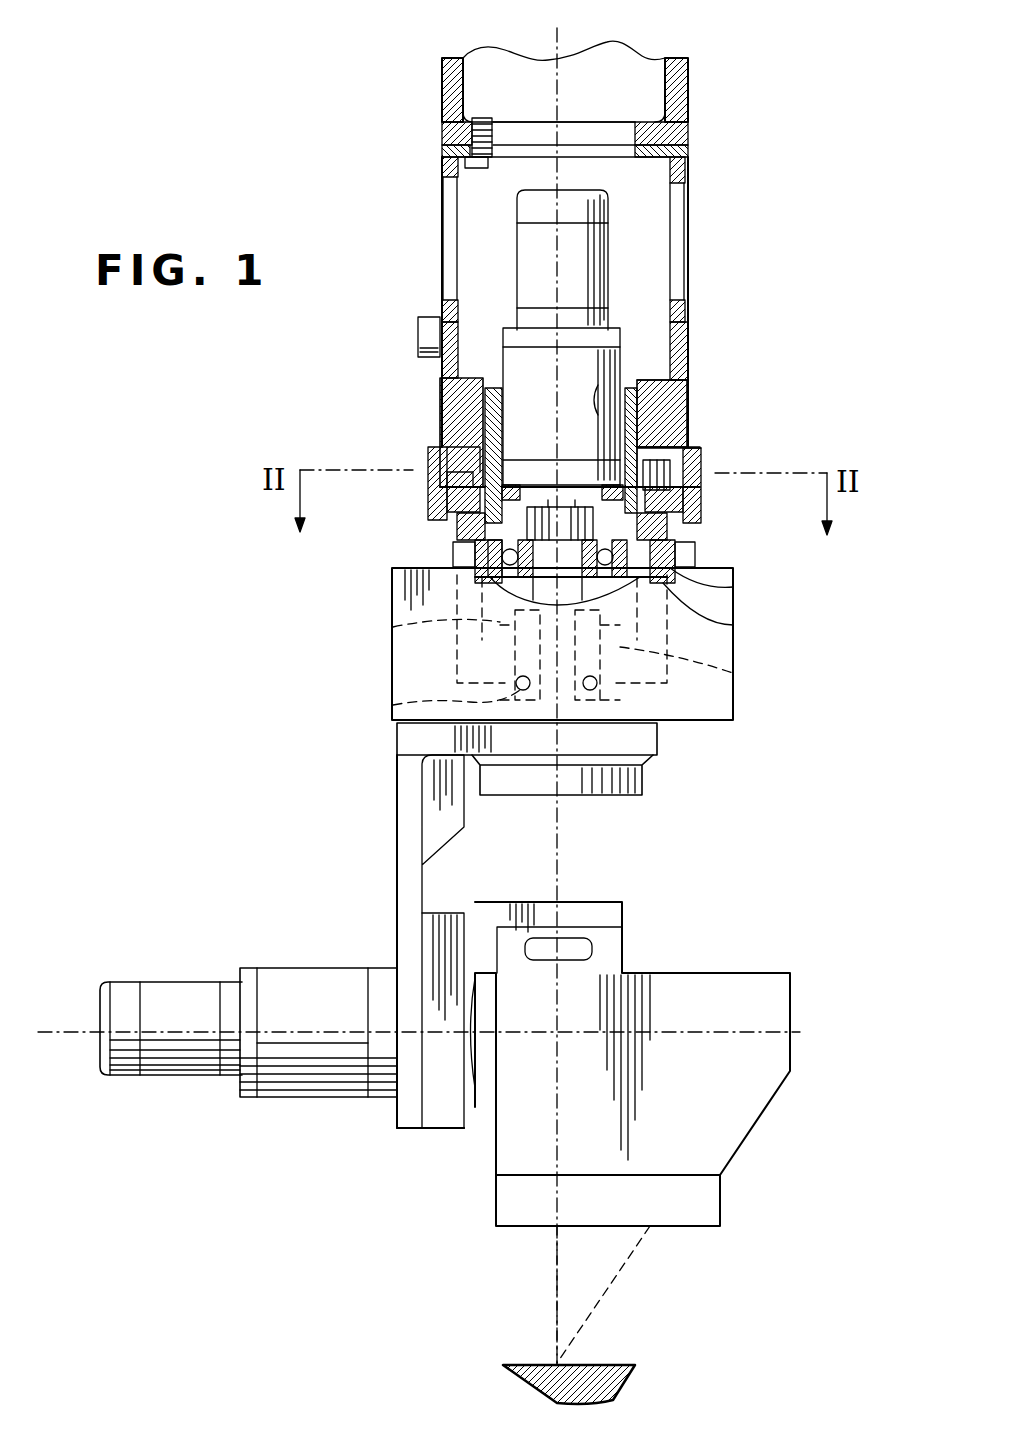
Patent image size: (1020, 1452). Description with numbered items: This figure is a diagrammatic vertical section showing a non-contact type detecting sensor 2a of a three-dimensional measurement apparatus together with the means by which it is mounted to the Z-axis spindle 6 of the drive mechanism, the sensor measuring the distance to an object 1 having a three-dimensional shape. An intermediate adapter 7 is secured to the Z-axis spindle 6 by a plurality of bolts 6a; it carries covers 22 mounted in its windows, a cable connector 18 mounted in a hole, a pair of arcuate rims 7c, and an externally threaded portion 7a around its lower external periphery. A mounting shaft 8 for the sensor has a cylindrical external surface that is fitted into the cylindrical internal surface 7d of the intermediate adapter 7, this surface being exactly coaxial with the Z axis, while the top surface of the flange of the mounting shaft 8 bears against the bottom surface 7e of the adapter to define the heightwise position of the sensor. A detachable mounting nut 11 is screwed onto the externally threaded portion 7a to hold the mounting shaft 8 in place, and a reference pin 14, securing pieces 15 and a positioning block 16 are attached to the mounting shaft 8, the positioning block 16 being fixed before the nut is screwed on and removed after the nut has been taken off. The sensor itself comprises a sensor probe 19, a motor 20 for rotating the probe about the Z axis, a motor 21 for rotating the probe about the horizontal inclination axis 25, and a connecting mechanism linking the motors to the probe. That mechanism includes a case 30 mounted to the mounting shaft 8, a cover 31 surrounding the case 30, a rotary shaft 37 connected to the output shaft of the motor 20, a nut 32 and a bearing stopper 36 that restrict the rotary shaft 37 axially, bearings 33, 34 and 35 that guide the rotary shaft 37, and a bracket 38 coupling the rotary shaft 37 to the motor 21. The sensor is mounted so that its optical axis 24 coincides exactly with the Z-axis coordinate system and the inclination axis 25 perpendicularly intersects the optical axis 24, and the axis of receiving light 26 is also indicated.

The object 1 is at (622, 1365).
The non-contact type detecting sensor 2a is at (397, 827).
The Z-axis spindle 6 is at (688, 108).
The bolts 6a is at (478, 170).
The intermediate adapter 7 is at (685, 353).
The externally threaded portion 7a is at (428, 463).
The rims 7c is at (465, 418).
The cylindrical internal surface 7d is at (598, 400).
The bottom surface 7e is at (457, 527).
The mounting shaft 8 is at (662, 398).
The detachable mounting nut 11 is at (700, 457).
The reference pin 14 is at (697, 500).
The securing pieces 15 is at (450, 480).
The positioning block 16 is at (687, 417).
The cable connector 18 is at (417, 335).
The sensor probe 19 is at (743, 973).
The motor 20 is at (608, 335).
The motor 21 is at (295, 968).
The covers 22 is at (442, 240).
The optical axis 24 is at (557, 1280).
The inclination axis 25 is at (87, 1032).
The axis of receiving light 26 is at (600, 1295).
The case 30 is at (670, 542).
The cover 31 is at (392, 650).
The nut 32 is at (733, 592).
The bearing 33 is at (733, 627).
The bearing 34 is at (733, 677).
The bearing 35 is at (393, 705).
The bearing stopper 36 is at (393, 627).
The rotary shaft 37 is at (572, 732).
The bracket 38 is at (400, 1122).